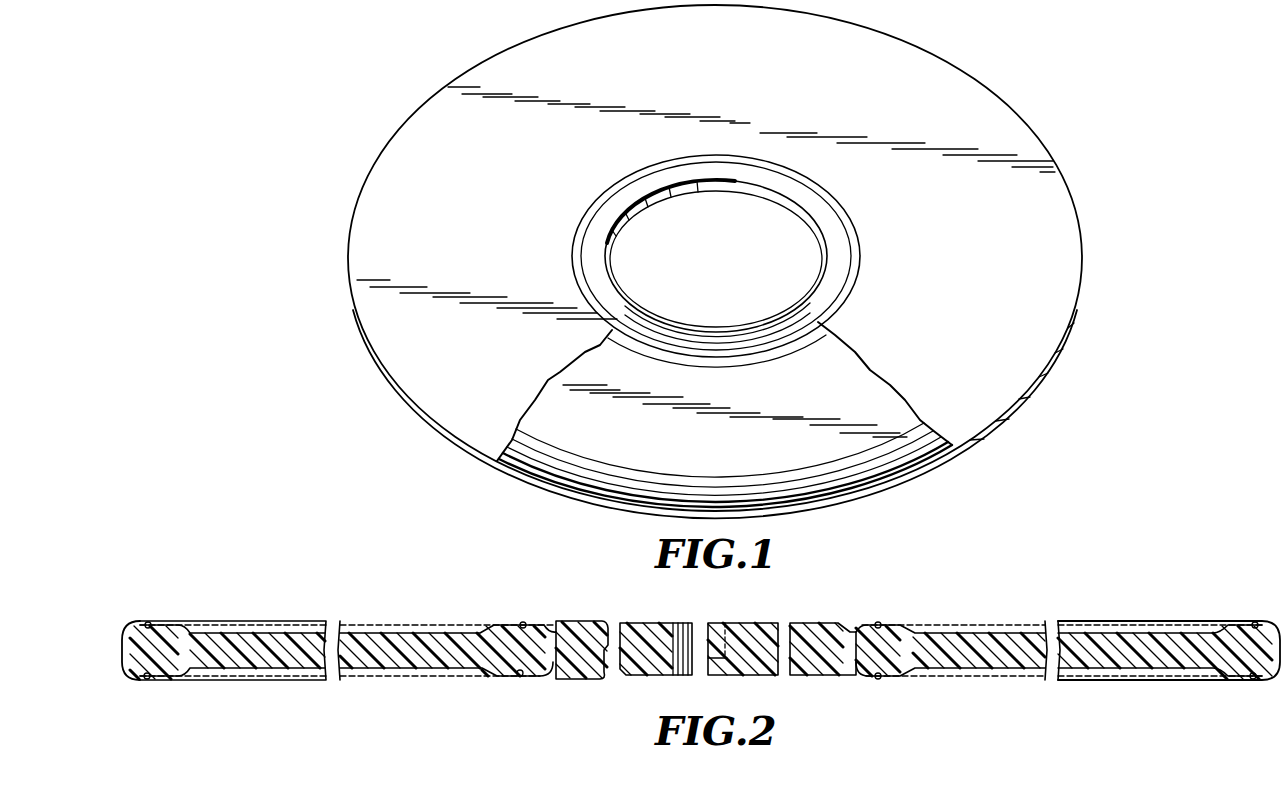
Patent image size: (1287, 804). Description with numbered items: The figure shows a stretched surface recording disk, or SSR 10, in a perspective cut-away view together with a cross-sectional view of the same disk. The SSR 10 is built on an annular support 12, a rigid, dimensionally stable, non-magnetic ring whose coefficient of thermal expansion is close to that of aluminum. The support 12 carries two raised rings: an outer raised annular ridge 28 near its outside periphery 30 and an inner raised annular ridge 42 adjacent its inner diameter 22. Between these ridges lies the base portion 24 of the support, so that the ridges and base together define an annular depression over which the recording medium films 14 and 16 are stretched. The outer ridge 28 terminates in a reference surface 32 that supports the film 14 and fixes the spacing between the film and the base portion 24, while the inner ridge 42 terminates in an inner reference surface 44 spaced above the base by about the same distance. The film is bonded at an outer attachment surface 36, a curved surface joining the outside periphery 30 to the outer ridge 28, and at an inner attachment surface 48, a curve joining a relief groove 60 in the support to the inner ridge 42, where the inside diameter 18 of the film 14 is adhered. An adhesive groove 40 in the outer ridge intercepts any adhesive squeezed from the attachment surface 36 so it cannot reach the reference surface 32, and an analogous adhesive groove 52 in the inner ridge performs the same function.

In FIG. 1, the SSR 10 is at (1046, 134).
In FIG. 2, the SSR 10 is at (1105, 608).
In FIG. 1, the annular support 12 is at (1033, 392).
In FIG. 2, the annular support 12 is at (628, 677).
In FIG. 1, the recording medium film 14 is at (1055, 200).
In FIG. 2, the recording medium film 14 is at (1067, 617).
In FIG. 2, the recording medium film 16 is at (1067, 677).
In FIG. 1, the inside diameter of the recording medium film 18 is at (748, 163).
In FIG. 2, the inside diameter of the recording medium film 18 is at (852, 625).
In FIG. 2, the inner diameter of the support 22 is at (723, 624).
In FIG. 1, the base portion 24 is at (575, 440).
In FIG. 2, the base portion 24 is at (346, 620).
In FIG. 1, the outer raised annular ridge 28 is at (862, 480).
In FIG. 2, the outer raised annular ridge 28 is at (193, 620).
In FIG. 2, the outside periphery 30 is at (123, 652).
In FIG. 2, the reference surface 32 is at (167, 620).
In FIG. 2, the outer attachment surface 36 is at (125, 628).
In FIG. 2, the adhesive groove 40 is at (148, 622).
In FIG. 1, the inner raised annular ridge 42 is at (760, 350).
In FIG. 2, the inner raised annular ridge 42 is at (482, 622).
In FIG. 2, the inner reference surface 44 is at (512, 623).
In FIG. 2, the inner attachment surface 48 is at (545, 622).
In FIG. 2, the adhesive groove 52 is at (526, 622).
In FIG. 2, the relief groove 60 is at (840, 623).